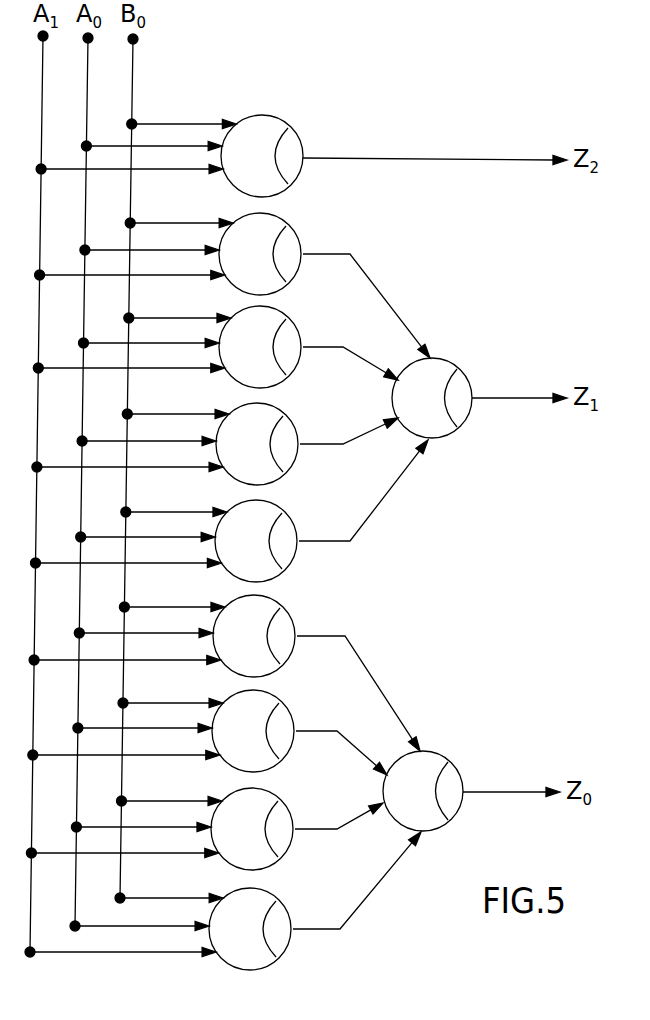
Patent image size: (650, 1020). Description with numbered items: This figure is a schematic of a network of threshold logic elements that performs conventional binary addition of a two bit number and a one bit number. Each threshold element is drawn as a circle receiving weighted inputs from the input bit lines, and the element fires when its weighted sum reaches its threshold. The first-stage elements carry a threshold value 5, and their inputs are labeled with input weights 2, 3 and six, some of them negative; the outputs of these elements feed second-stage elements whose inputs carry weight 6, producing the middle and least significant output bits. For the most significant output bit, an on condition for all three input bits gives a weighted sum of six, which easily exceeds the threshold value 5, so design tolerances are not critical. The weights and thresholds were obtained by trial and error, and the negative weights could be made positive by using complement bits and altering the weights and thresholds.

The threshold-5 logic gate 5 is at (256, 542).
The weight-6 input / threshold gate output stage 6 is at (252, 591).
The weight-2 input connection 2 is at (140, 516).
The weight-3 input connection 3 is at (137, 593).